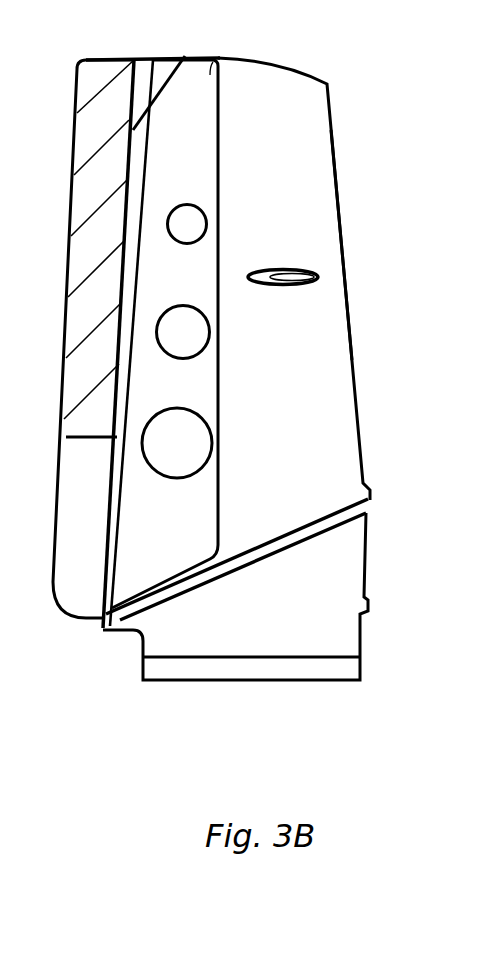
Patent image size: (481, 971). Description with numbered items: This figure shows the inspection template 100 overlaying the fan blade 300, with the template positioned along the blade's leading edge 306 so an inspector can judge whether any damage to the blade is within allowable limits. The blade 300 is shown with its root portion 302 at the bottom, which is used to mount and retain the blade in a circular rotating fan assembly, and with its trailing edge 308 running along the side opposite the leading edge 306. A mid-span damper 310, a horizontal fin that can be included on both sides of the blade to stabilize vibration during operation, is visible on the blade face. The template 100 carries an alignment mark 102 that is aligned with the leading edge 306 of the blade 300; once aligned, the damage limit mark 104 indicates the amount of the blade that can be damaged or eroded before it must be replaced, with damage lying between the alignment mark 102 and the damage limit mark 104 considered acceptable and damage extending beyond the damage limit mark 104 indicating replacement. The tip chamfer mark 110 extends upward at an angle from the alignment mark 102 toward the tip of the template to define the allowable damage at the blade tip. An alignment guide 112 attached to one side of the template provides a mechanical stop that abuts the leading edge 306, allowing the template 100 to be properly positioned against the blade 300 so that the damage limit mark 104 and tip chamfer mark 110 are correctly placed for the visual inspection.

The template 100 is at (222, 57).
The alignment mark 102 is at (133, 57).
The damage limit mark 104 is at (153, 55).
The tip chamfer mark 110 is at (183, 53).
The alignment guide 112 is at (83, 147).
The fan blade 300 is at (311, 86).
The root portion 302 is at (353, 578).
The leading edge 306 is at (98, 605).
The trailing edge 308 is at (342, 214).
The mid-span damper 310 is at (318, 275).